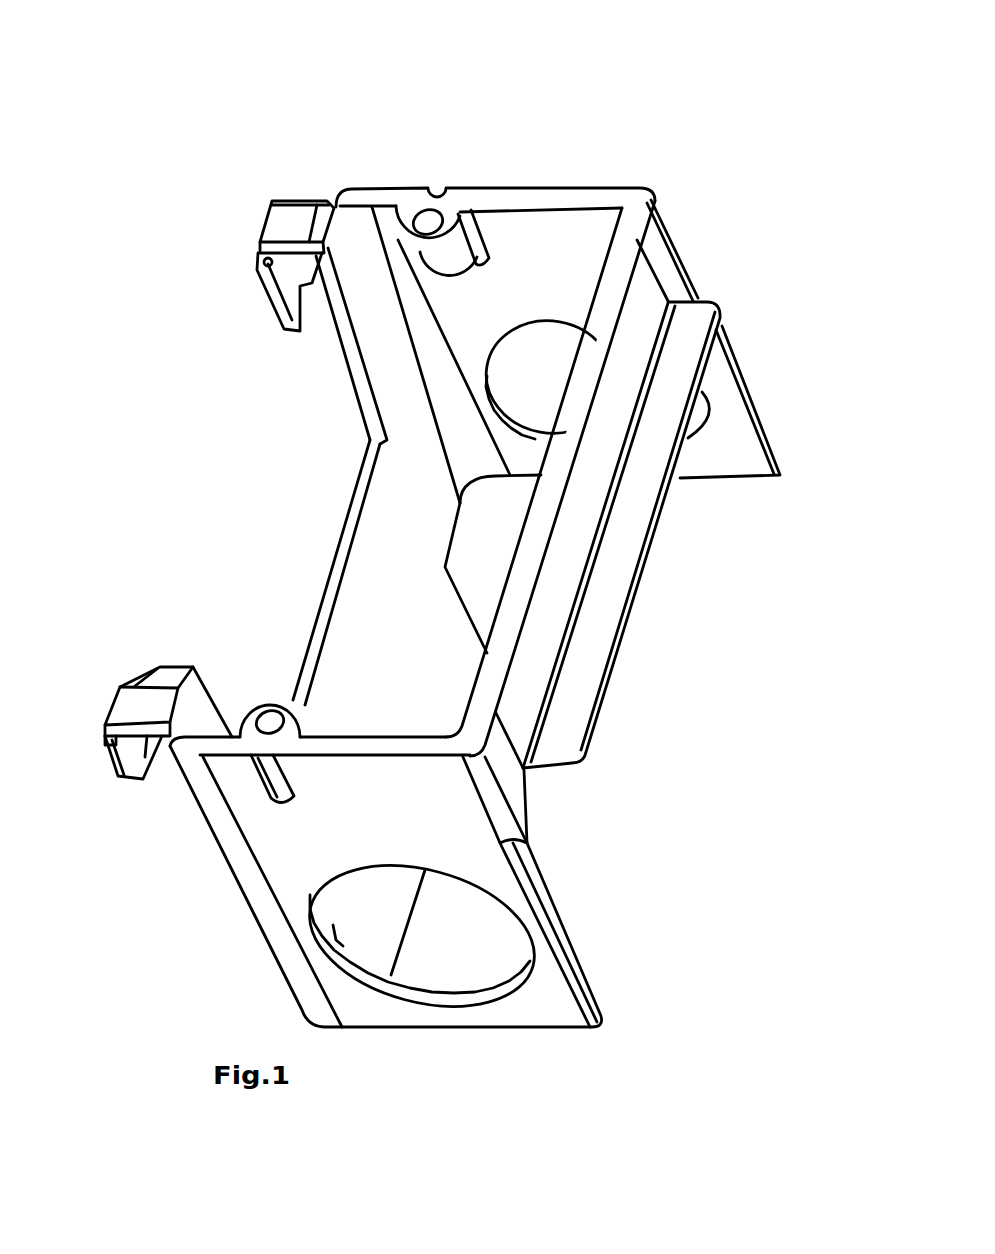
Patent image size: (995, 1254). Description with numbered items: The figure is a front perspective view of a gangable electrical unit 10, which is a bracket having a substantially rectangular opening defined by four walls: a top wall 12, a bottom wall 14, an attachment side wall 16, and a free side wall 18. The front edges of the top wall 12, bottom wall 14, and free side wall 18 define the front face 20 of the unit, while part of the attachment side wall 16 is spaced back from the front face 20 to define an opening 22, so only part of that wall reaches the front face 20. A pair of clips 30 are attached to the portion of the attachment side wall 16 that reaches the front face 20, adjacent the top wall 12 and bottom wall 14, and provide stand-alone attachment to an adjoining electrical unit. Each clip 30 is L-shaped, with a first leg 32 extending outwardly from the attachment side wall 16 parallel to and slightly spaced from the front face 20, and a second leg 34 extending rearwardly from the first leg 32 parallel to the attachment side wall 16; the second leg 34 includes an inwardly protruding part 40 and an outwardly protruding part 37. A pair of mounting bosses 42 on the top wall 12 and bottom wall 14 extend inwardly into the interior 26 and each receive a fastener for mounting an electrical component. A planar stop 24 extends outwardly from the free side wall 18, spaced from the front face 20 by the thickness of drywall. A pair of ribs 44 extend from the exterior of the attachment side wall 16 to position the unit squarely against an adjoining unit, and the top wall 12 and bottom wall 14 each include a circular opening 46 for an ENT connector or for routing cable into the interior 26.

The gangable electrical unit 10 is at (411, 570).
The top wall 12 is at (613, 188).
The bottom wall 14 is at (435, 870).
The attachment side wall 16 is at (324, 657).
The free side wall 18 is at (527, 797).
The front face 20 is at (613, 290).
The opening 22 is at (277, 548).
The stop 24 is at (607, 632).
The interior 26 is at (429, 591).
The clips 30 is at (189, 485).
The first leg of the L 32 is at (293, 207).
The second leg of the L 34 is at (262, 300).
The outwardly protruding part 37 is at (125, 767).
The inwardly protruding part 40 is at (148, 669).
The mounting bosses 42 is at (463, 257).
The ribs 44 is at (303, 476).
The circular opening 46 is at (560, 368).